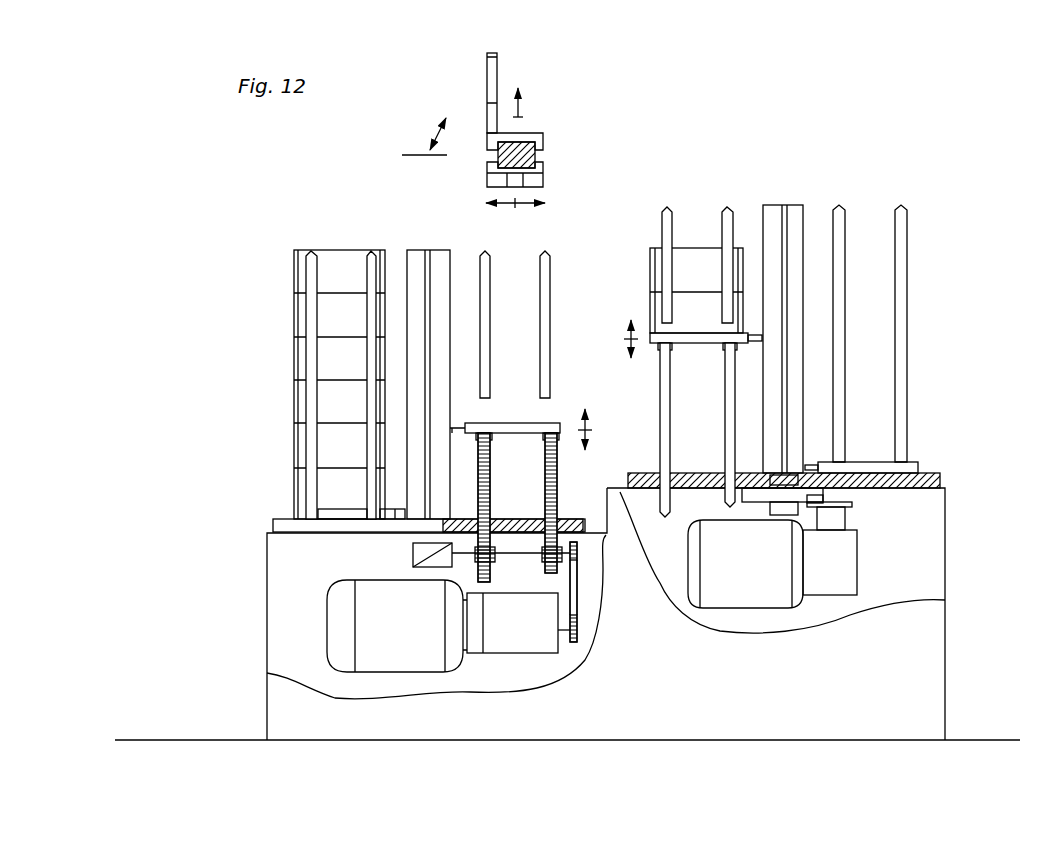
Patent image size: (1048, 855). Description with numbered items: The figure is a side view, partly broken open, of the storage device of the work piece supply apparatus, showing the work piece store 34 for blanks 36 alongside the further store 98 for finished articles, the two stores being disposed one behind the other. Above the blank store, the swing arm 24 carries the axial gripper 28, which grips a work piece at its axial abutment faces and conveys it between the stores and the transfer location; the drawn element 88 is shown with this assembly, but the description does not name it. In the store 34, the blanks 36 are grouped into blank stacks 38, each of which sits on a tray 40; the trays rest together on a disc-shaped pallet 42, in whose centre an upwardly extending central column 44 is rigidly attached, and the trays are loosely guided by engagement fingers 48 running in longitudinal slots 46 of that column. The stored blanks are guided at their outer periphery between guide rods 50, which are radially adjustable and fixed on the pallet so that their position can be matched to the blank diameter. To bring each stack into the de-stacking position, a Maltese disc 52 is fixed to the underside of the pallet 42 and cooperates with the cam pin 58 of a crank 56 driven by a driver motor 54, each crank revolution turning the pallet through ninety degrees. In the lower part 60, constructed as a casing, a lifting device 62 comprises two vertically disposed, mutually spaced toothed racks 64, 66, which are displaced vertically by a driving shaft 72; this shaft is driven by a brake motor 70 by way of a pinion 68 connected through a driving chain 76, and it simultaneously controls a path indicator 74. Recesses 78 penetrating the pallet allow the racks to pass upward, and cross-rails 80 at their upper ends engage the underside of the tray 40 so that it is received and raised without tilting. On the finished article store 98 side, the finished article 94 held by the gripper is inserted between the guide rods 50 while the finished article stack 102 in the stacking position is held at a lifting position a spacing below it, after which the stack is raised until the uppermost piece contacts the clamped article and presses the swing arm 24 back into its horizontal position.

The swing arm 24 is at (536, 151).
The axial gripper 28 is at (545, 185).
The work piece store 34 is at (310, 440).
The blanks 36 is at (300, 398).
The blank stacks 38 is at (300, 322).
The tray 40 is at (333, 508).
The pallet 42 is at (286, 525).
The central column 44 is at (413, 267).
The longitudinal slots 46 is at (428, 268).
The engagement fingers 48 is at (400, 509).
The guide rods 50 is at (370, 270).
The Maltese disc 52 is at (823, 492).
The driver motor 54 is at (740, 605).
The crank 56 is at (843, 507).
The cam pin 58 is at (808, 507).
The lower part 60 is at (277, 608).
The lifting device 62 is at (578, 585).
The toothed rack 64 is at (557, 490).
The toothed rack 66 is at (490, 490).
The pinion 68 is at (578, 565).
The brake motor 70 is at (389, 660).
The driving shaft 72 is at (490, 565).
The path indicator 74 is at (413, 553).
The driving chain 76 is at (577, 602).
The recesses 78 is at (548, 519).
The cross-rails 80 is at (550, 440).
The transfer arm 88 is at (495, 78).
The finished article 94 is at (656, 305).
The finished article store 98 is at (944, 518).
The finished article stack 102 is at (656, 258).